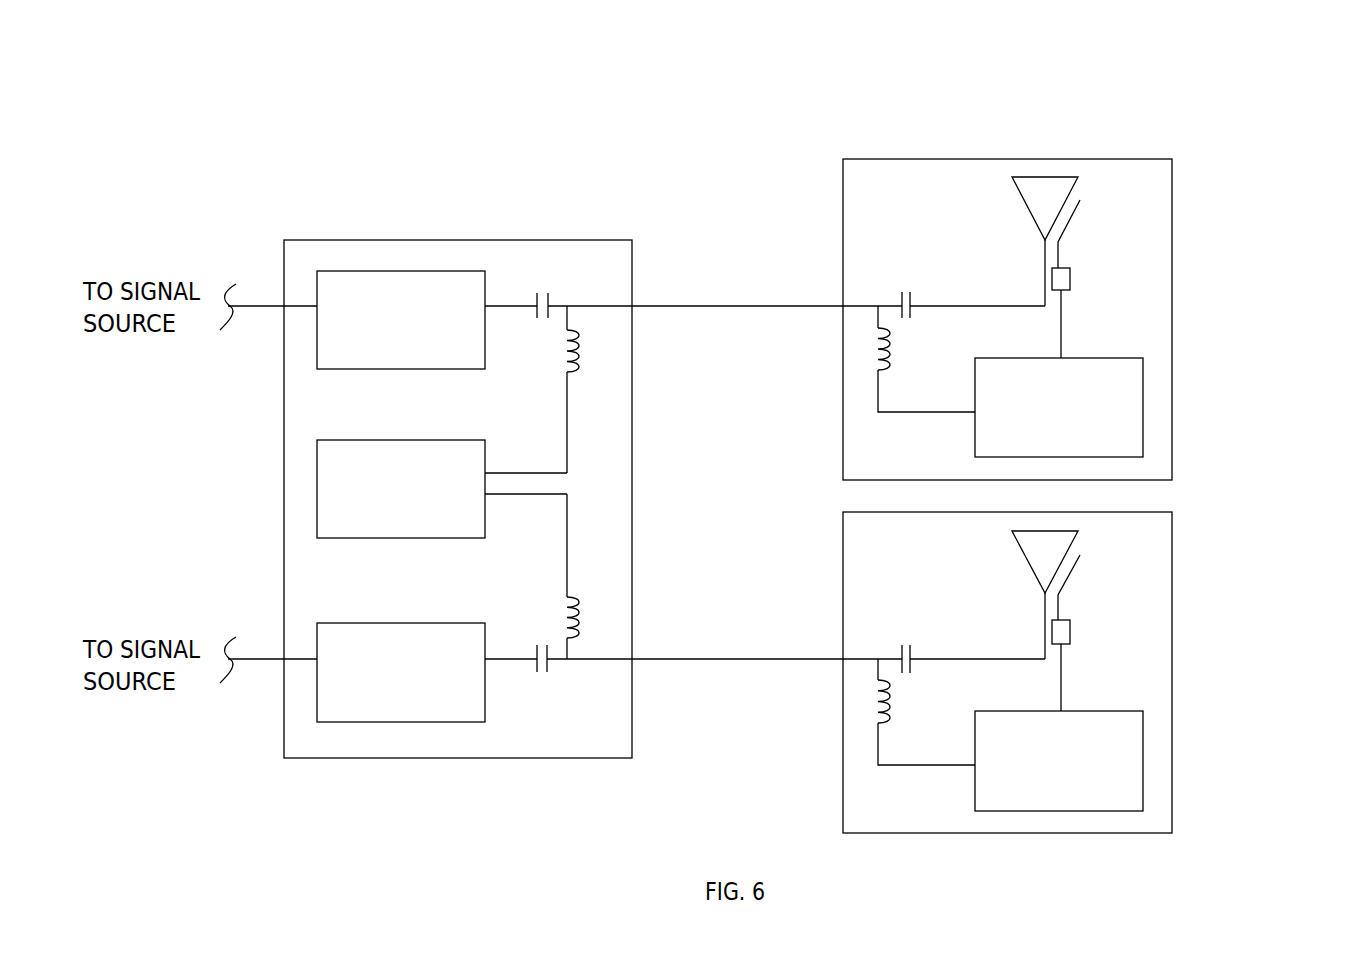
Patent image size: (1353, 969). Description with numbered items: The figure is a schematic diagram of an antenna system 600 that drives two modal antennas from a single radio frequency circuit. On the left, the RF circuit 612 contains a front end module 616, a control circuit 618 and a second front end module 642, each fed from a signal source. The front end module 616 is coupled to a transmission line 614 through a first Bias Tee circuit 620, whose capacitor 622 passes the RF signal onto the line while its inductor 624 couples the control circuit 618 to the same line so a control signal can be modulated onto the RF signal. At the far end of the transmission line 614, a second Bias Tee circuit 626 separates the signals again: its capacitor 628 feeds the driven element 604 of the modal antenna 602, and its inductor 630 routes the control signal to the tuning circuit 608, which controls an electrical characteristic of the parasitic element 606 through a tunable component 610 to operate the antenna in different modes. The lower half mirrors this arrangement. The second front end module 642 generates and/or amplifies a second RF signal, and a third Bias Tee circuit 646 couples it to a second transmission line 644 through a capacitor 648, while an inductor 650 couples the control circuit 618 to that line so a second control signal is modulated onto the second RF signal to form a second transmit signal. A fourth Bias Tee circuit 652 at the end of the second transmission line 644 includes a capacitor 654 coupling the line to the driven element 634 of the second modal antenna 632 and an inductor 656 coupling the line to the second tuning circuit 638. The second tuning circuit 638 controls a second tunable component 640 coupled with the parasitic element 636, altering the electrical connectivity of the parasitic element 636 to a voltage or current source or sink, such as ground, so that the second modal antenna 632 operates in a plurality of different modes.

The antenna system 600 is at (213, 58).
The modal antenna 602 is at (1240, 158).
The driven element 604 is at (1078, 183).
The parasitic element 606 is at (1080, 222).
The tuning circuit 608 is at (1078, 420).
The first tuning element 610 is at (1070, 291).
The RF circuit 612 is at (335, 240).
The transmission line 614 is at (693, 306).
The front end module 616 is at (420, 333).
The control circuit 618 is at (420, 502).
The first Bias Tee circuit 620 is at (594, 320).
The capacitor 622 is at (548, 296).
The inductor 624 is at (578, 355).
The second Bias Tee circuit 626 is at (851, 326).
The capacitor 628 is at (897, 296).
The inductor 630 is at (870, 365).
The second modal antenna 632 is at (1225, 505).
The driven element 634 is at (1078, 537).
The parasitic element 636 is at (1080, 575).
The second tuning circuit 638 is at (1078, 774).
The second tunable component 640 is at (1070, 645).
The second front end module 642 is at (420, 686).
The second transmission line 644 is at (745, 658).
The third Bias Tee circuit 646 is at (610, 627).
The capacitor 648 is at (548, 668).
The inductor 650 is at (578, 598).
The fourth Bias Tee circuit 652 is at (858, 637).
The capacitor 654 is at (900, 647).
The inductor 656 is at (872, 719).